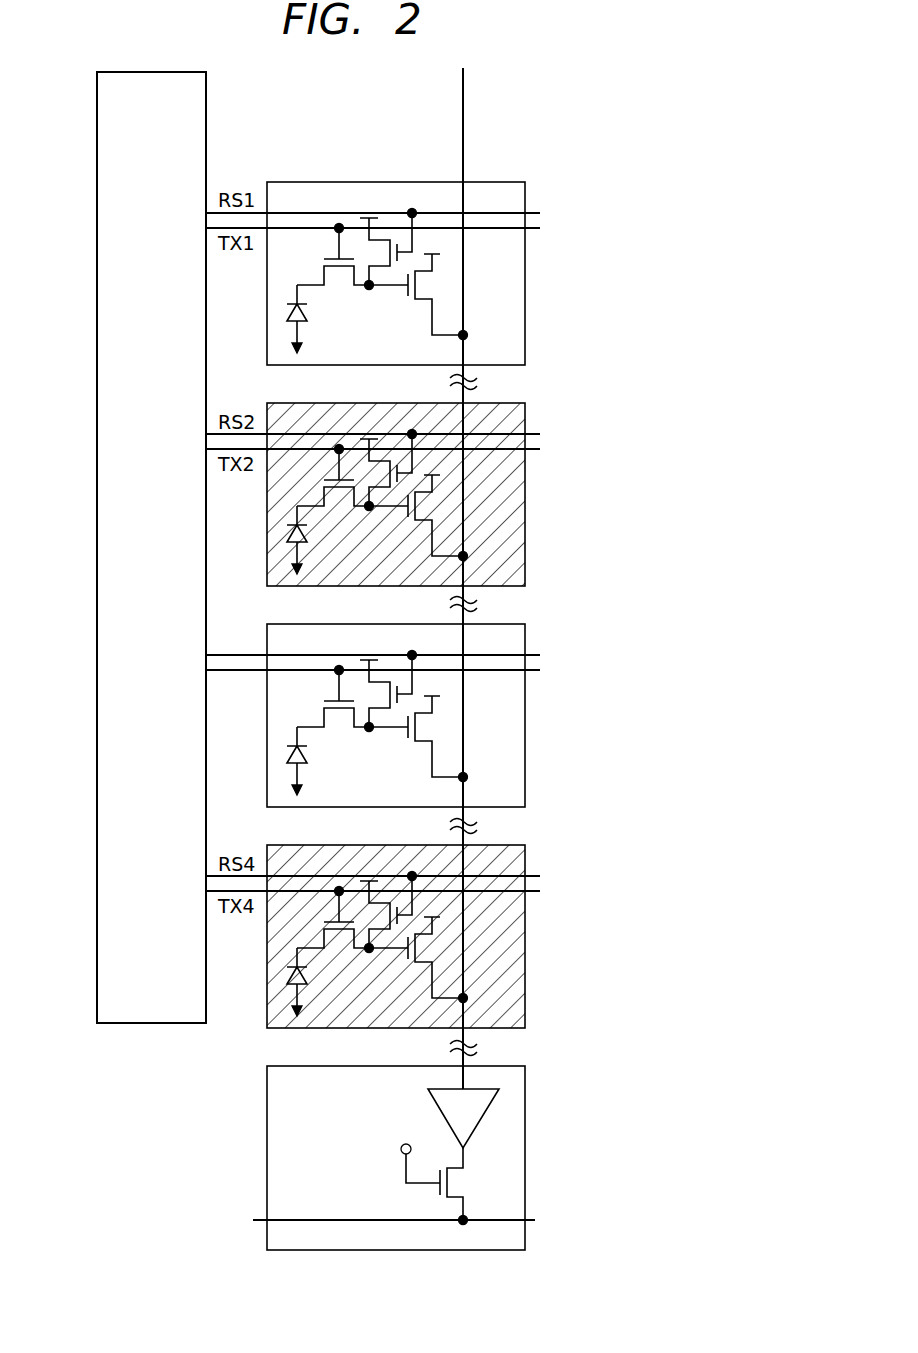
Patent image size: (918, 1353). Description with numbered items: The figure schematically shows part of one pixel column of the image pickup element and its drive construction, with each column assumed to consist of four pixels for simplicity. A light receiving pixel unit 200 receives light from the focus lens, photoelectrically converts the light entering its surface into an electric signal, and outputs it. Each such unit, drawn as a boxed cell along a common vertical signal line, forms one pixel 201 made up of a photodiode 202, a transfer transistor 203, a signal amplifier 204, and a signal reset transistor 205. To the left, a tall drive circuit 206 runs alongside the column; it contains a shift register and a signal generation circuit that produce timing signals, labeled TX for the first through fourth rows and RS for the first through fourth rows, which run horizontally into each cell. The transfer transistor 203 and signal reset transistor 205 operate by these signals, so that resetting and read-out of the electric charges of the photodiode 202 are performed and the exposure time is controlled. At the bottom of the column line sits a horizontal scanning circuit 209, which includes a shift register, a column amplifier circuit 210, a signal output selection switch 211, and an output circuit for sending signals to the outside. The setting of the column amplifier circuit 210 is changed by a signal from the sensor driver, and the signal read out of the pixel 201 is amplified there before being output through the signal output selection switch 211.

The light receiving pixel unit 200 is at (553, 118).
The pixel 201 is at (403, 715).
The photodiode 202 is at (286, 755).
The transfer transistor 203 is at (337, 715).
The signal amplifier 204 is at (423, 726).
The signal reset transistor 205 is at (381, 697).
The drive circuit 206 is at (97, 545).
The horizontal scanning circuit 209 is at (427, 1158).
The column amplifier circuit 210 is at (442, 1117).
The signal output selection switch 211 is at (455, 1182).